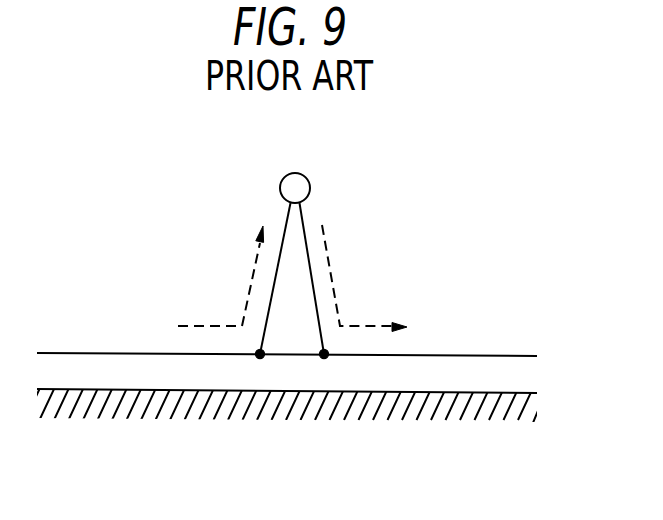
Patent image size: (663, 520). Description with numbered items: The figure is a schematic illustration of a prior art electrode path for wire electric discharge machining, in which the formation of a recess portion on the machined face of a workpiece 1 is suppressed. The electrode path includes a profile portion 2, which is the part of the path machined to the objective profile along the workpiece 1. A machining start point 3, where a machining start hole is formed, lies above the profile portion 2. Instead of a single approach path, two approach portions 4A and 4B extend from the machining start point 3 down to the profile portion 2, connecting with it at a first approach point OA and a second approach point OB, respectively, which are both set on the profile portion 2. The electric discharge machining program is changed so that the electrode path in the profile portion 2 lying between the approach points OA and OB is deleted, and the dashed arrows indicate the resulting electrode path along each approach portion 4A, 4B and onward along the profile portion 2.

The workpiece 1 is at (288, 412).
The profile portion 2 is at (490, 356).
The machining start point 3 is at (297, 173).
The approach portion 4A is at (302, 222).
The approach portion 4B is at (288, 222).
The first approach point OA is at (324, 369).
The second approach point OB is at (259, 369).